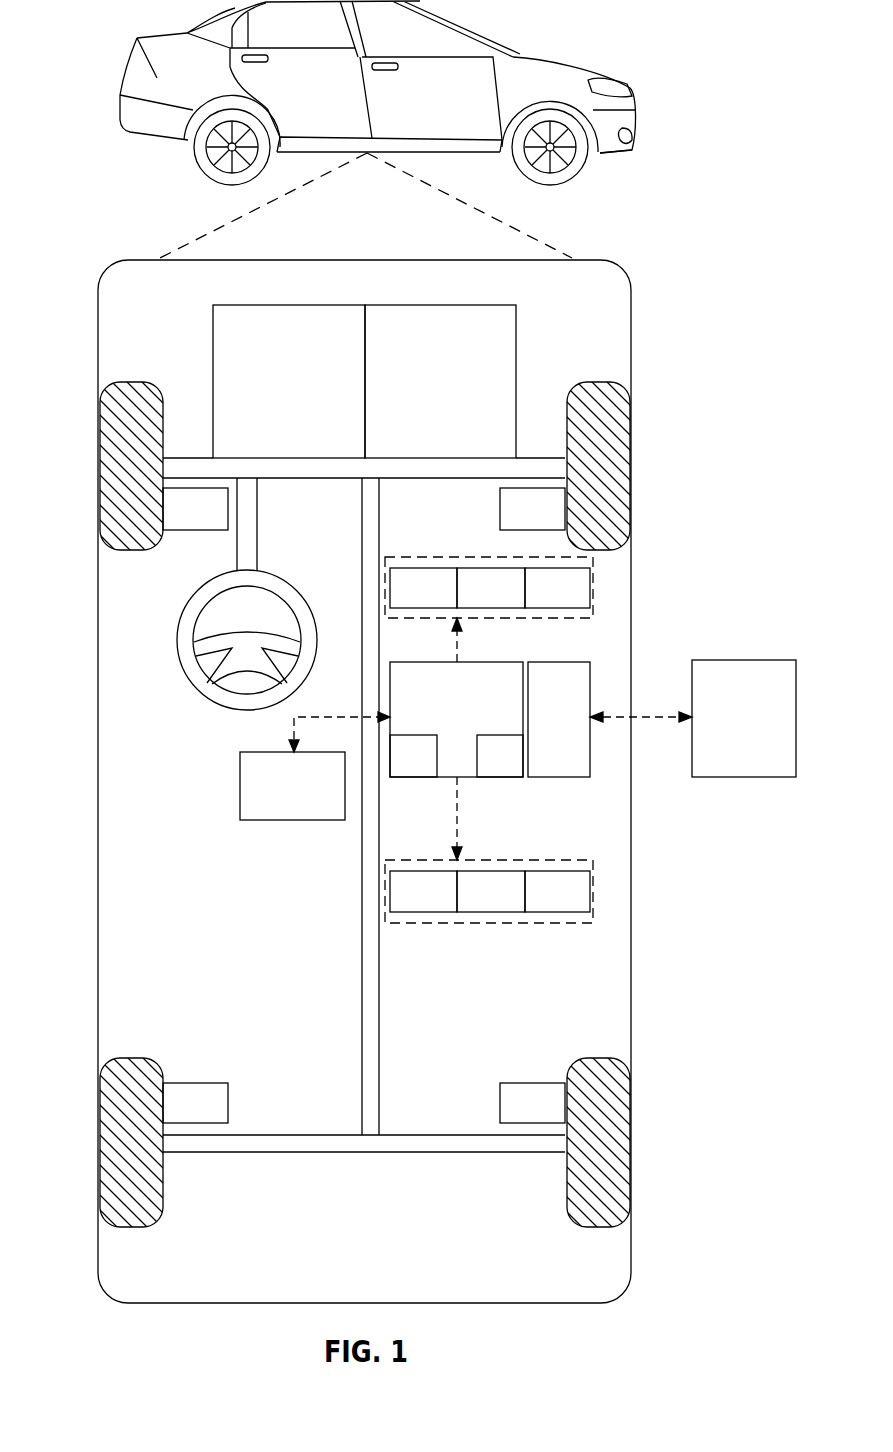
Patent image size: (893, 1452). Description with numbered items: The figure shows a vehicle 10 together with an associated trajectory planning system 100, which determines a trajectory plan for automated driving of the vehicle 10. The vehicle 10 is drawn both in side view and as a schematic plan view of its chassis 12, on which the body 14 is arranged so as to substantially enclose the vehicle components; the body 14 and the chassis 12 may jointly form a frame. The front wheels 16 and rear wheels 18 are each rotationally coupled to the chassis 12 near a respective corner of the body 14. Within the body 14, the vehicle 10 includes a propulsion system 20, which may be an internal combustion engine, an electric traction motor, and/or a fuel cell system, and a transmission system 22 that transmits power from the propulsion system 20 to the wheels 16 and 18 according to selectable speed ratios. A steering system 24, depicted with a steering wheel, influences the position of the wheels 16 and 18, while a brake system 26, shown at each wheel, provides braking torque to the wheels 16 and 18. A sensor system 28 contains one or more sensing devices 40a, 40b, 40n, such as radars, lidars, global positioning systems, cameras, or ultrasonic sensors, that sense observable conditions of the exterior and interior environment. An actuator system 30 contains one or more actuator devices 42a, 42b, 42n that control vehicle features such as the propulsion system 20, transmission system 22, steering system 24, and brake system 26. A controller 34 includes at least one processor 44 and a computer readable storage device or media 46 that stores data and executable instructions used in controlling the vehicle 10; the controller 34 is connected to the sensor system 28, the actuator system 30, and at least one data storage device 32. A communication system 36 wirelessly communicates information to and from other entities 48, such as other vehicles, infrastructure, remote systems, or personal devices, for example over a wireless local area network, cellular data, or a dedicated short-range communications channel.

The vehicle 10 is at (132, 72).
The trajectory planning system 100 is at (707, 280).
The chassis 12 is at (362, 997).
The body 14 is at (98, 833).
The front wheels 16 is at (131, 382).
The rear wheels 18 is at (133, 1228).
The propulsion system 20 is at (273, 396).
The transmission system 22 is at (425, 396).
The steering system 24 is at (268, 548).
The brake system 26 is at (183, 521).
The sensor system 28 is at (470, 557).
The actuator system 30 is at (462, 925).
The data storage device 32 is at (277, 801).
The controller 34 is at (441, 712).
The communication system 36 is at (543, 732).
The sensing device 40a is at (445, 602).
The sensing device 40b is at (513, 602).
The sensing device 40n is at (579, 602).
The actuator device 42a is at (445, 907).
The actuator device 42b is at (513, 907).
The actuator device 42n is at (579, 907).
The processor 44 is at (426, 769).
The computer readable storage device or media 46 is at (514, 769).
The other entities 48 is at (728, 734).